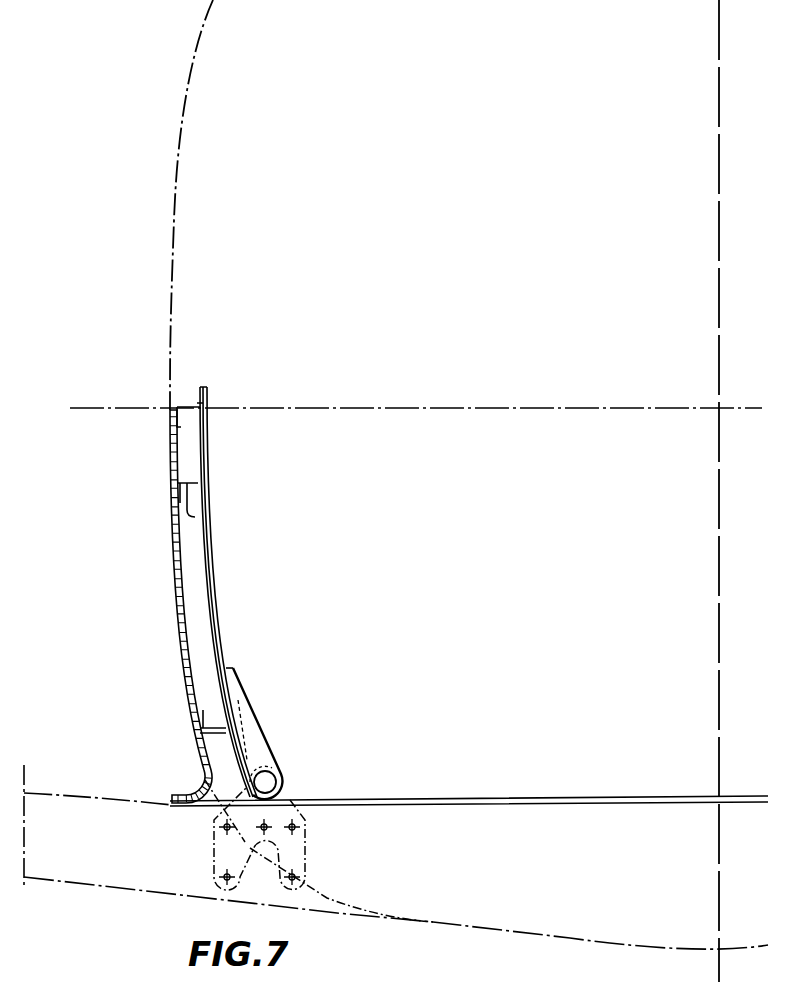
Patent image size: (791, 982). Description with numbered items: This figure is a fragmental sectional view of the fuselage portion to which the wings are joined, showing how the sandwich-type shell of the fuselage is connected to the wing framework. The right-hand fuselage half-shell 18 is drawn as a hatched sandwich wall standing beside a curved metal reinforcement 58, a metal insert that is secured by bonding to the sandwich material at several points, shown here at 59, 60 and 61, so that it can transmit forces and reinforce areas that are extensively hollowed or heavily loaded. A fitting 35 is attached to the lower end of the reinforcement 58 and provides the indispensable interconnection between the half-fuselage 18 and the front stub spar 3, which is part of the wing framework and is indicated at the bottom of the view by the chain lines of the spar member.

The front stub spar 3 is at (176, 866).
The right-hand fuselage half-shell 18 is at (170, 480).
The fitting 35 is at (250, 745).
The metal reinforcement 58 is at (257, 603).
The bonding point 59 is at (183, 403).
The bonding point 60 is at (195, 517).
The bonding point 61 is at (217, 722).